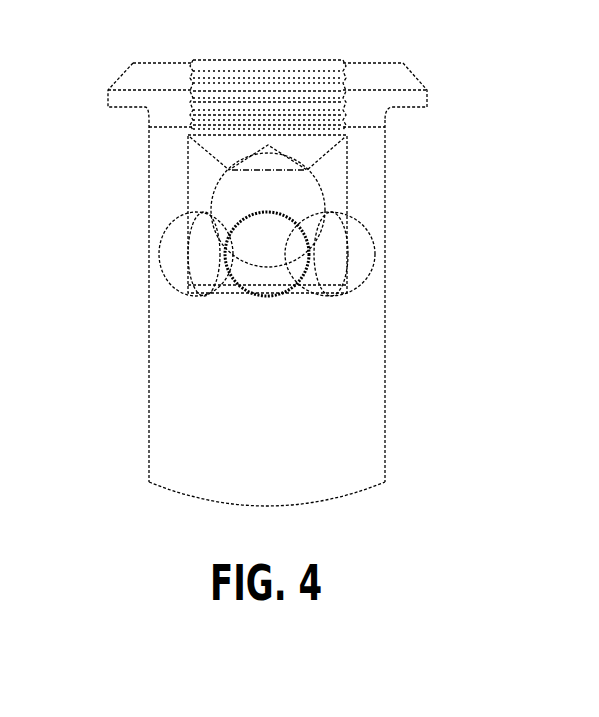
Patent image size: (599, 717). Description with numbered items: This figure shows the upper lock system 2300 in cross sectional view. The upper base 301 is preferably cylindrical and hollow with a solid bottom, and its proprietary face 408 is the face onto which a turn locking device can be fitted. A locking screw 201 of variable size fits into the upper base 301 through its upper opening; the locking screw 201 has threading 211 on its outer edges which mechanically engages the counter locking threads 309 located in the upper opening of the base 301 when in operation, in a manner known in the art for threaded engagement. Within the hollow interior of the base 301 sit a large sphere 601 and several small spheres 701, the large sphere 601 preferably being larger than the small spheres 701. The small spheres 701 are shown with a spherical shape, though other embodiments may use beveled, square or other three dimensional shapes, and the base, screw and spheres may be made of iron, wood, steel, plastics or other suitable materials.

The locking screw 201 is at (318, 60).
The threading 211 is at (188, 78).
The proprietary face 408 is at (415, 76).
The locking threads 309 is at (190, 178).
The large sphere 601 is at (323, 188).
The small spheres 701 is at (200, 258).
The upper base 301 is at (385, 415).
The upper lock system 2300 is at (385, 482).